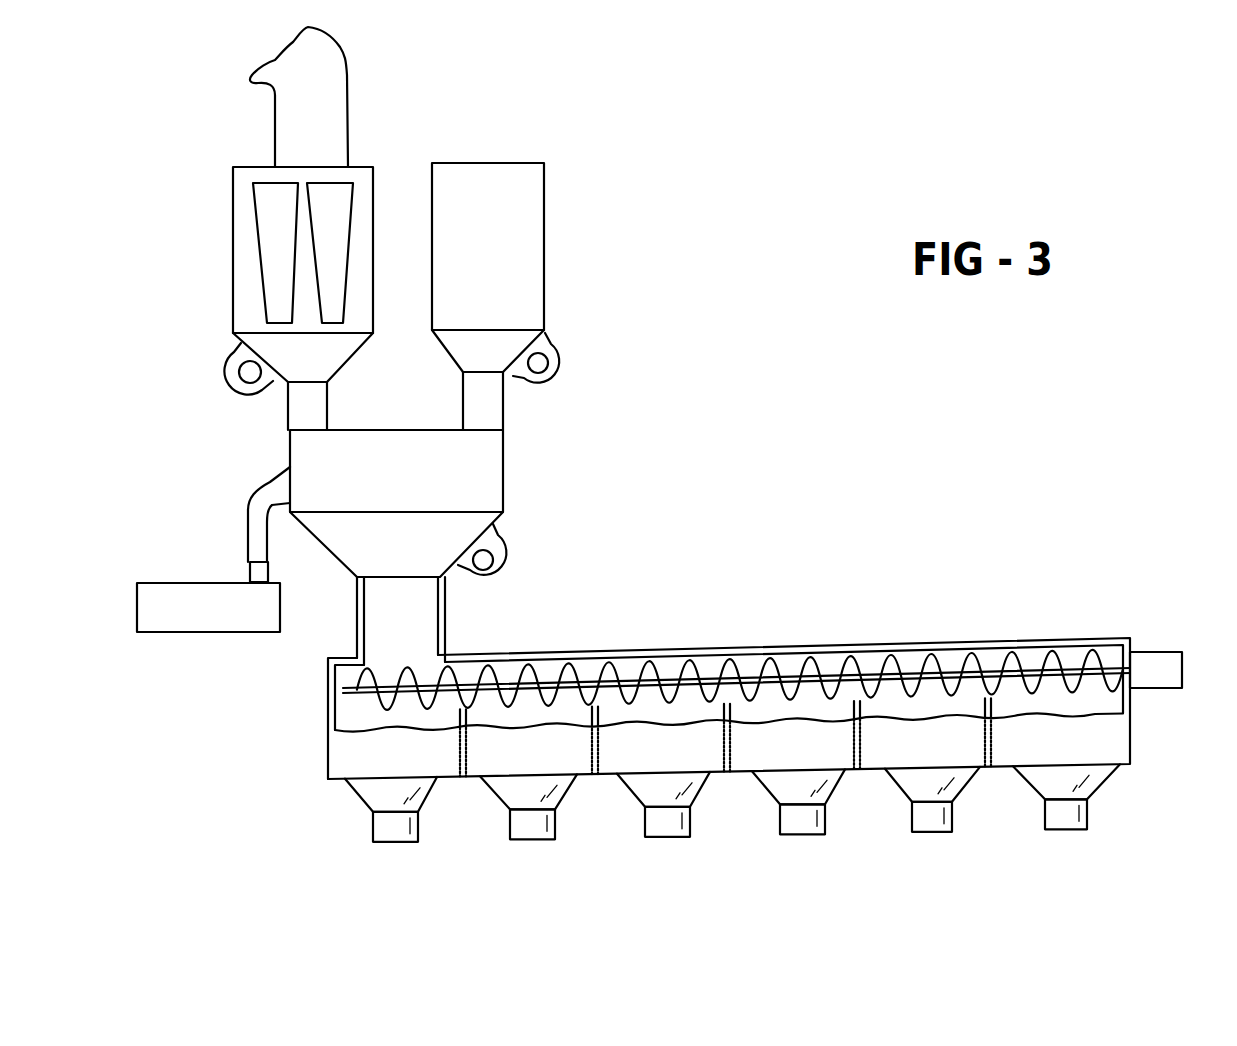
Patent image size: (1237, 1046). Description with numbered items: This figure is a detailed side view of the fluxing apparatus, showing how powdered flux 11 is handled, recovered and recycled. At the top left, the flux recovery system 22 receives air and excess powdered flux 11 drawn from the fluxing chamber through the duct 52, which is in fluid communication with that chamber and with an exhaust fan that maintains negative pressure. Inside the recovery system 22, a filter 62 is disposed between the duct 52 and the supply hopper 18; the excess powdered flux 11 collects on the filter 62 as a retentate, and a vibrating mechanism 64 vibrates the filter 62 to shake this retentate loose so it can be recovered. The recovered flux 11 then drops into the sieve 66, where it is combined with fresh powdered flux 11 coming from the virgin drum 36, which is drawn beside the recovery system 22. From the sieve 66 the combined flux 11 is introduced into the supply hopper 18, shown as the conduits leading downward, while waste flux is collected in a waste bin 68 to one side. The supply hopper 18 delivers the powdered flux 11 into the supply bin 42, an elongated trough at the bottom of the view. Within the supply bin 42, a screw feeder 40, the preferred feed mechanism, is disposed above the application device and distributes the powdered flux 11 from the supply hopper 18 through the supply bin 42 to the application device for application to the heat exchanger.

The powdered flux 11 is at (1115, 752).
The supply hopper 18 is at (500, 518).
The flux recovery system 22 is at (223, 210).
The virgin drum 36 is at (496, 189).
The screw feeder 40 is at (820, 658).
The supply bin 42 is at (1132, 722).
The duct 52 is at (333, 117).
The filter 62 is at (267, 257).
The vibrating mechanism 64 is at (345, 350).
The sieve 66 is at (483, 468).
The waste bin 68 is at (263, 620).